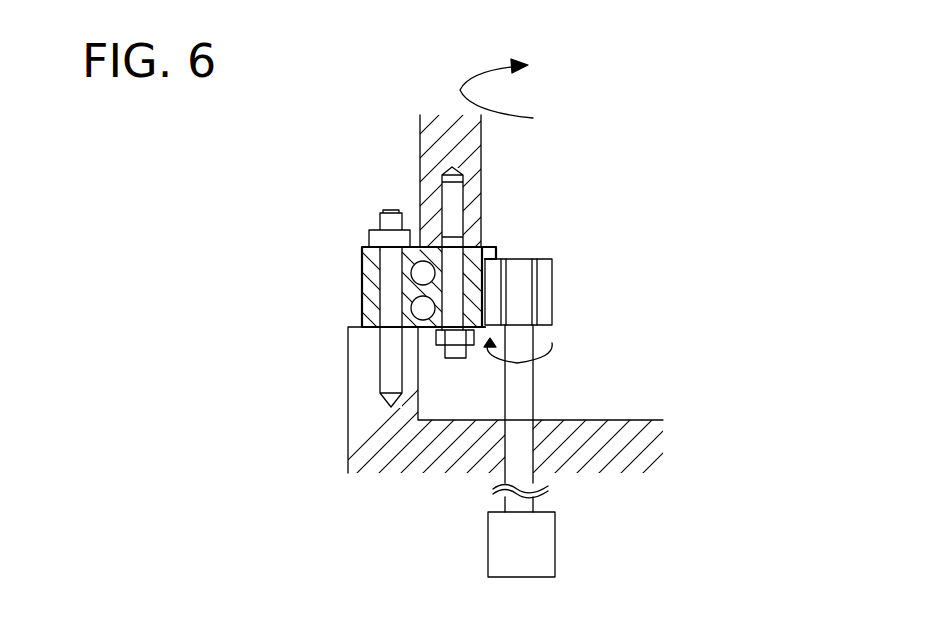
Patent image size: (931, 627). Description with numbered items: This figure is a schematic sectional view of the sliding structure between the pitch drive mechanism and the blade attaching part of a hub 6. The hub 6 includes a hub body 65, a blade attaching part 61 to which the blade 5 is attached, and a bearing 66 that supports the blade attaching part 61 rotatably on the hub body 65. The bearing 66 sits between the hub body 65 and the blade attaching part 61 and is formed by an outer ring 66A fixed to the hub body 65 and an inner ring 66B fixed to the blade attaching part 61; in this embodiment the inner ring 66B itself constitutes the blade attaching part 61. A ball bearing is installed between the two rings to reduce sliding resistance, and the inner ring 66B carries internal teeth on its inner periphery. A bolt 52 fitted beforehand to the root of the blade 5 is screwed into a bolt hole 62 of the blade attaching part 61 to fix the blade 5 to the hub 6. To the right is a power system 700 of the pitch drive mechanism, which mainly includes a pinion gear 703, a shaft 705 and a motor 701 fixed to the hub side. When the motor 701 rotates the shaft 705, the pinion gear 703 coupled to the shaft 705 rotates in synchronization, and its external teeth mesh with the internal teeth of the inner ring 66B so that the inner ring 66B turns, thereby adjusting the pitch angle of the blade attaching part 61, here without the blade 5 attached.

The blade 5 is at (420, 141).
The bolt 52 is at (455, 256).
The bearing 66 is at (377, 281).
The outer ring 66A is at (363, 274).
The inner ring 66B is at (420, 240).
The blade attaching part 61 is at (292, 200).
The bolt hole 62 is at (451, 343).
The hub body 65 is at (348, 388).
The hub 6 is at (311, 453).
The power system of the pitch drive mechanism 700 is at (606, 418).
The pinion gear 703 is at (553, 277).
The shaft 705 is at (535, 380).
The motor 701 is at (556, 540).